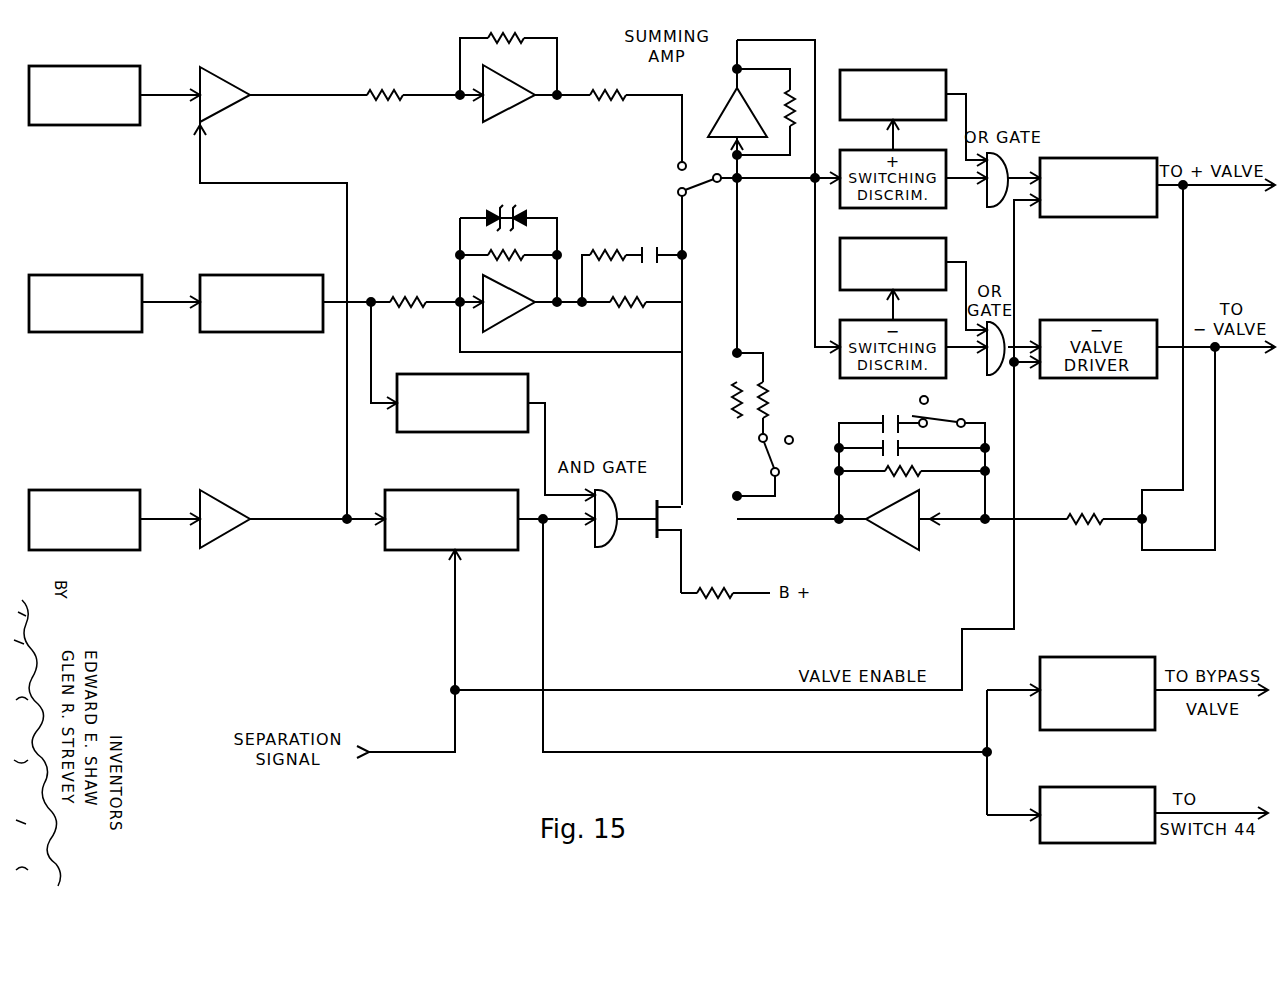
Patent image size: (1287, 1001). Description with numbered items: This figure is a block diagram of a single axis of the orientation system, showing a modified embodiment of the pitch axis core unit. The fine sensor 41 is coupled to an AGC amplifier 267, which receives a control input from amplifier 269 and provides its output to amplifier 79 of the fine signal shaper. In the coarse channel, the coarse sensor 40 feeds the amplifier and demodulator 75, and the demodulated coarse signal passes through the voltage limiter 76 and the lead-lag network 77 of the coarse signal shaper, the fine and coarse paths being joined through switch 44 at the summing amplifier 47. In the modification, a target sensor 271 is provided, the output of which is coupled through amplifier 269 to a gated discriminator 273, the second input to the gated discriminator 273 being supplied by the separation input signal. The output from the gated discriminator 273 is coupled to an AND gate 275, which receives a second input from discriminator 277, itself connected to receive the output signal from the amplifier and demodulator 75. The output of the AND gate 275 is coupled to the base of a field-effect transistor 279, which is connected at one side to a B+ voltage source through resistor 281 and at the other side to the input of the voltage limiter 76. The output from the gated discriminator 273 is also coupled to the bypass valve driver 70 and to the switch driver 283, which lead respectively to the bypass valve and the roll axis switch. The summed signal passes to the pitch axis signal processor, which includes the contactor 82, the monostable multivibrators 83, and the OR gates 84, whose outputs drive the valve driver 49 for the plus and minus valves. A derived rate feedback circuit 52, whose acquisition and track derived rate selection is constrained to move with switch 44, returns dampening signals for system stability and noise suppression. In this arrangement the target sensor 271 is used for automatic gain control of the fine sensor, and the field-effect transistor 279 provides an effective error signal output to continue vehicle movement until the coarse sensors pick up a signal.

The fine sensor 41 is at (110, 42).
The AGC amplifier 267 is at (245, 90).
The amplifier 79 is at (522, 104).
The switch 44 is at (702, 186).
The summing amplifier 47 is at (728, 118).
The voltage limiter 76 is at (429, 203).
The lead-lag network 77 is at (645, 210).
The coarse sensor 40 is at (117, 270).
The amplifier and demodulator 75 is at (284, 270).
The discriminator 277 is at (487, 438).
The target sensor 271 is at (117, 478).
The amplifier 269 is at (232, 498).
The gated discriminator 273 is at (430, 557).
The AND gate 275 is at (608, 542).
The field-effect transistor 279 is at (663, 514).
The resistor 281 is at (712, 602).
The monostable multivibrators 83 is at (948, 64).
The OR gates 84 is at (1011, 125).
The valve driver 49 is at (1141, 135).
The contactor 82 is at (942, 227).
The derived rate feedback circuit 52 is at (829, 405).
The bypass valve driver 70 is at (1032, 712).
The switch driver 283 is at (1114, 781).